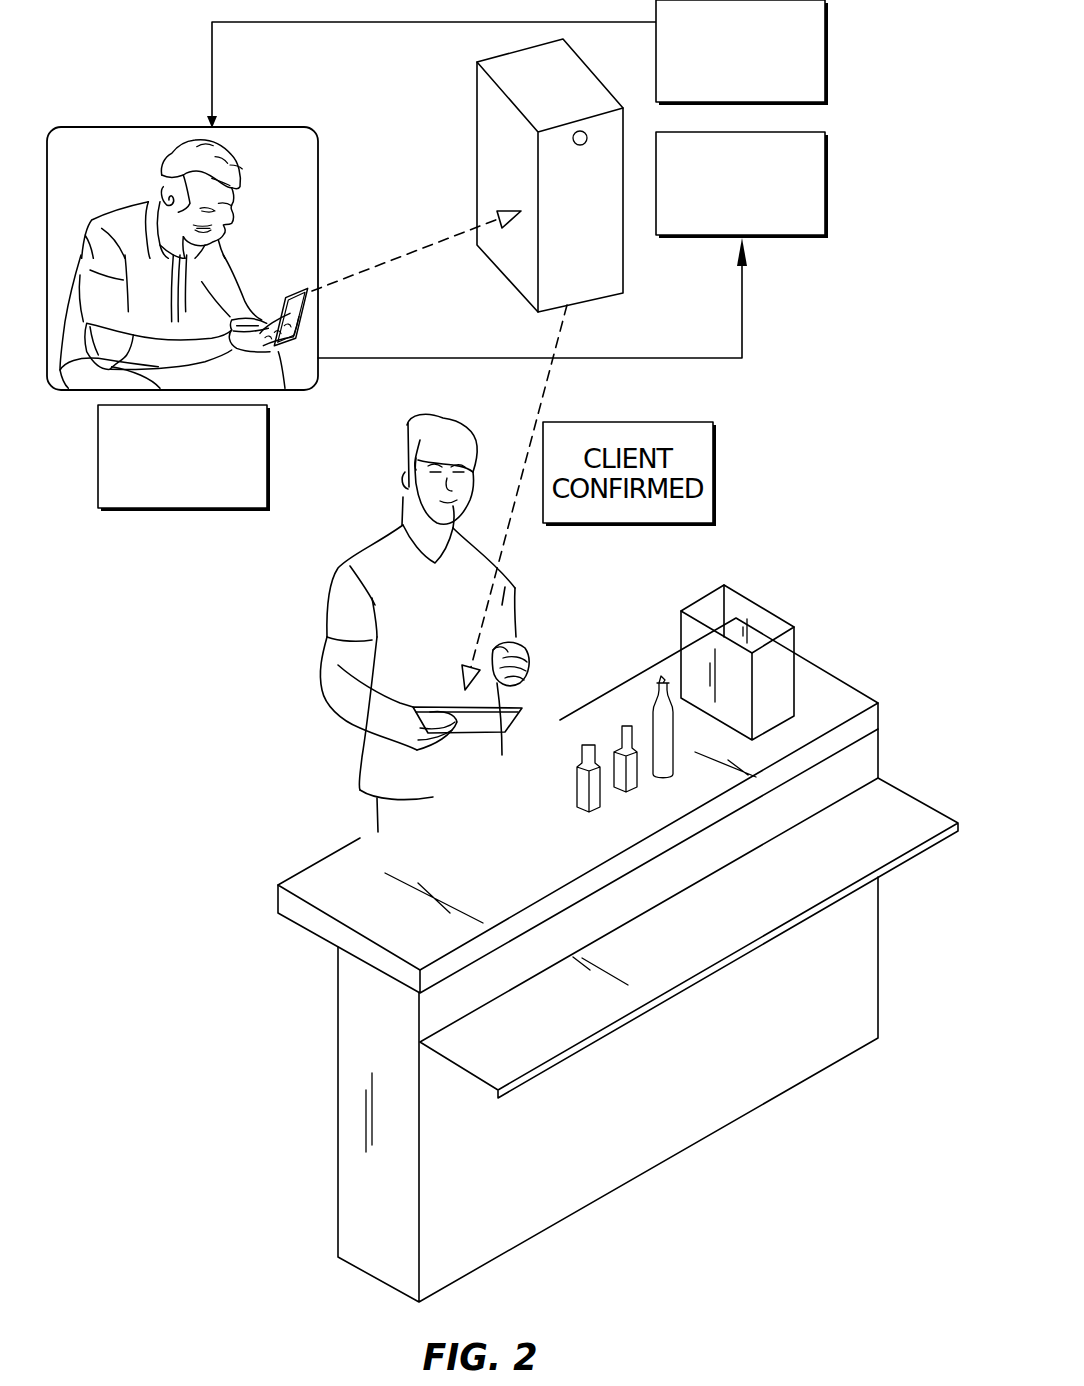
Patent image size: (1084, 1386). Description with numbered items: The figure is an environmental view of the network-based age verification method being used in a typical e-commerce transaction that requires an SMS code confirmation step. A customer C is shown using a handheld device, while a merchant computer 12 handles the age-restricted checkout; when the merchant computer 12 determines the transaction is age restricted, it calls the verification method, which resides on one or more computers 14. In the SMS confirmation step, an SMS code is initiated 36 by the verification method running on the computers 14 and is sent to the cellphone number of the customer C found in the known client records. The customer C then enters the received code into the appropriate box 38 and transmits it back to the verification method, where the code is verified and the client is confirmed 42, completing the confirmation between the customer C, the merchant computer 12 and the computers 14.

The merchant computer 12 is at (522, 708).
The computer 14 is at (608, 277).
The SMS code initiated 36 is at (825, 60).
The box 38 is at (140, 510).
The client confirmed 42 is at (825, 185).
The customer C is at (183, 167).